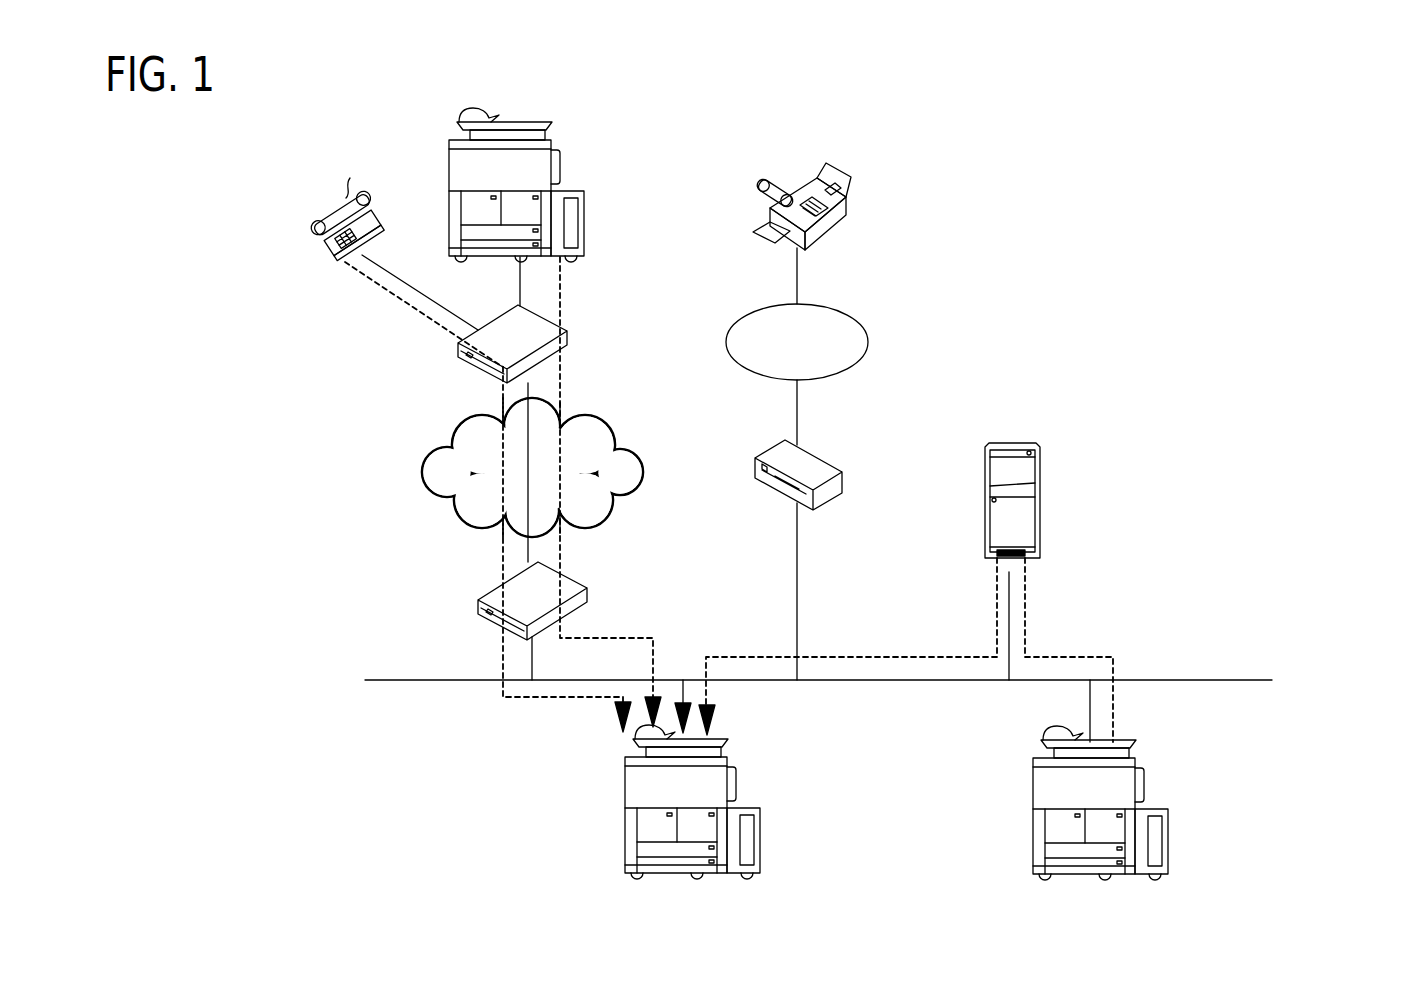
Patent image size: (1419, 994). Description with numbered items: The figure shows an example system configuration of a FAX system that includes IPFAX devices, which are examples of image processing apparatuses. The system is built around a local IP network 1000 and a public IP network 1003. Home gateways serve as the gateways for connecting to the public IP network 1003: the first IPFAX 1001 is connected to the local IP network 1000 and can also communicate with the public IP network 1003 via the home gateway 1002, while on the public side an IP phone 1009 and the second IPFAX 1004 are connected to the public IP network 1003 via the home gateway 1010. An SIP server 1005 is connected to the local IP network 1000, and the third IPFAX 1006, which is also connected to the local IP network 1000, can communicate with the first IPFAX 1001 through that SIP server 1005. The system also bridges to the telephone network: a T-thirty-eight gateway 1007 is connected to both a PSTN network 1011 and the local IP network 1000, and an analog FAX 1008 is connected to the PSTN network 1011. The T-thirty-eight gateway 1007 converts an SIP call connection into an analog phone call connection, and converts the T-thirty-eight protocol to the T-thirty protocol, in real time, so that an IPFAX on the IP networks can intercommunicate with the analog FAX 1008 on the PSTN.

The local IP network 1000 is at (1170, 680).
The IPFAX 1 1001 is at (745, 808).
The home gateway (HGW) 1002 is at (478, 600).
The public IP network 1003 is at (427, 457).
The IPFAX 2 1004 is at (462, 112).
The SIP server 1005 is at (1000, 443).
The IPFAX 3 1006 is at (1155, 812).
The T.38 gateway (T.38 GW) 1007 is at (755, 458).
The analog FAX 1008 is at (788, 178).
The IP phone 1009 is at (352, 178).
The home gateway (HGW) 1010 is at (565, 333).
The PSTN network 1011 is at (868, 297).